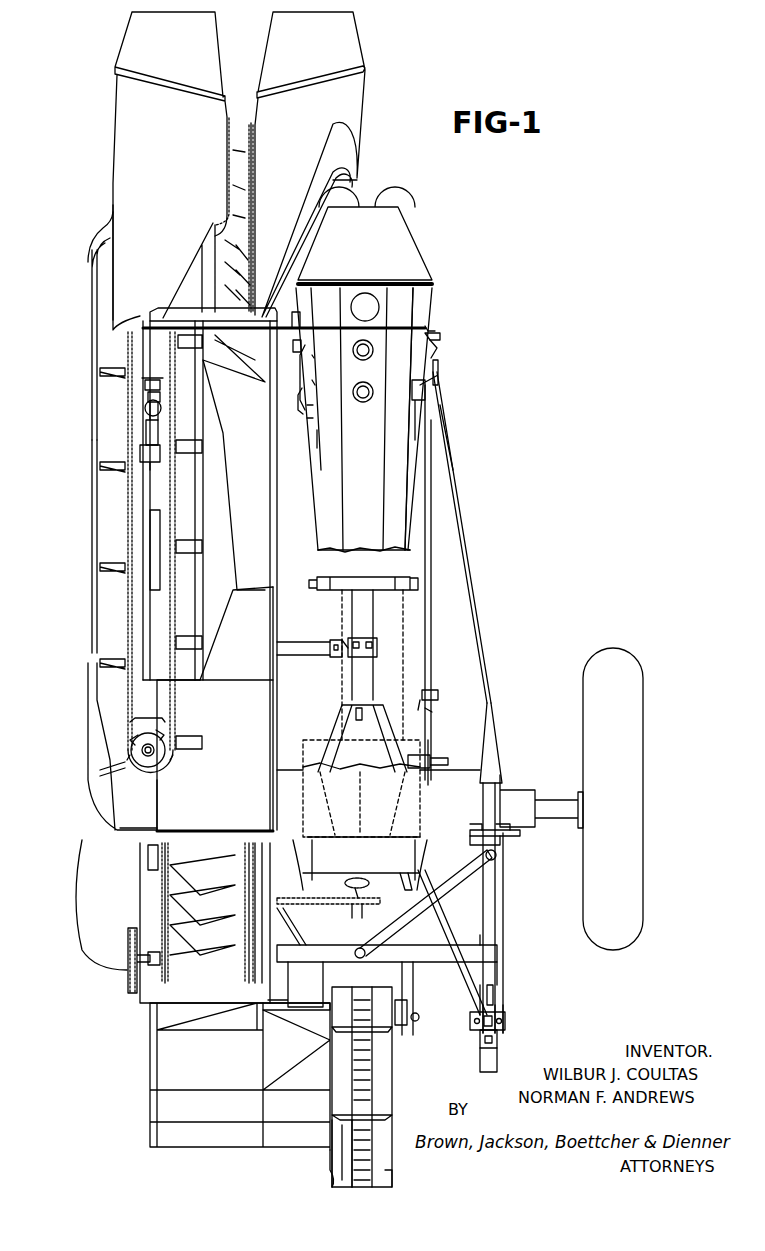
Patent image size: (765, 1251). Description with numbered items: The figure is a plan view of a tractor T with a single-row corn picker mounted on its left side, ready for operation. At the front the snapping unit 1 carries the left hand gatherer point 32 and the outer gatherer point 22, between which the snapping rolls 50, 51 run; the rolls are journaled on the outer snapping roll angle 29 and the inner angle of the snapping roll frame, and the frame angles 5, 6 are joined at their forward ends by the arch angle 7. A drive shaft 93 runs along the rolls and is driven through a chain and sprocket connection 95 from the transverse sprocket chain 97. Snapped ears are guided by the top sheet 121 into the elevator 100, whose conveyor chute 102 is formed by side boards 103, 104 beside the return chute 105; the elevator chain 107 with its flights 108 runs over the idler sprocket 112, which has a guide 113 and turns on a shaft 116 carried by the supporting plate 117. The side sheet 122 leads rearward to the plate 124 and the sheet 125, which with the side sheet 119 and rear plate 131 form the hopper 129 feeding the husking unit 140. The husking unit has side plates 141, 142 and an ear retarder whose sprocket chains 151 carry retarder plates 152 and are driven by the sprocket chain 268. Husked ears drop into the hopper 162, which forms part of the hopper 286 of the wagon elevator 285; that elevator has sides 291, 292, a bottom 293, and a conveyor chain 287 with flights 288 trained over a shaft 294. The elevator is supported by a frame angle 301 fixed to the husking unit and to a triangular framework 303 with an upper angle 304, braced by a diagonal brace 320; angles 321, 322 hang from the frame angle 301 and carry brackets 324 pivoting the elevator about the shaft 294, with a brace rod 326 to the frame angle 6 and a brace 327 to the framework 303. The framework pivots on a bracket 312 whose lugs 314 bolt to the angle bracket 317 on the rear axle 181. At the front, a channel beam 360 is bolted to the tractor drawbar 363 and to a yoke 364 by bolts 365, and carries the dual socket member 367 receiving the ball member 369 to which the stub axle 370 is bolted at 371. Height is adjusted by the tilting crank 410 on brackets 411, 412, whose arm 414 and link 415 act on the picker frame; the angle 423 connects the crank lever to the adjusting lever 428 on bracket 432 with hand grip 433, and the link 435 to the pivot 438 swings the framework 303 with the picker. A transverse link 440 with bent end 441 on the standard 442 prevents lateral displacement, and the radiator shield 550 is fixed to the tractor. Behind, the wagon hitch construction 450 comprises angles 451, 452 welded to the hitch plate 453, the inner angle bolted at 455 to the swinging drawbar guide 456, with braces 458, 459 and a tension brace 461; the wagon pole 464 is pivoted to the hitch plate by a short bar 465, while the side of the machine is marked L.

The snapping unit 1 is at (105, 164).
The main frame angle 5 is at (130, 352).
The inside frame angle 6 is at (272, 486).
The arch angle 7 is at (185, 305).
The outer gatherer point 22 is at (343, 36).
The outer snapping roll angle 29 is at (207, 268).
The left hand gatherer point 32 is at (140, 33).
The snapping roll 50 is at (252, 232).
The snapping roll 51 is at (218, 224).
The drive shaft 93 is at (155, 387).
The chain and sprocket connection 95 is at (140, 415).
The transverse sprocket chain 97 is at (140, 458).
The elevator 100 is at (84, 494).
The conveyor chute 102 is at (186, 504).
The side board 103 is at (165, 538).
The side board 104 is at (185, 580).
The return chute 105 is at (110, 530).
The elevator chain 107 is at (105, 552).
The flights 108 is at (118, 575).
The idler sprocket 112 is at (150, 740).
The guide 113 is at (142, 728).
The shaft 116 is at (148, 765).
The supporting plate 117 is at (110, 812).
The side sheet 119 is at (157, 795).
The top sheet 121 is at (233, 400).
The side sheet 122 is at (220, 485).
The plate 124 is at (250, 660).
The sheet 125 is at (270, 722).
The hopper 129 is at (245, 752).
The rear plate 131 is at (198, 830).
The husking unit 140 is at (140, 904).
The side plate 141 is at (155, 884).
The side plate 142 is at (255, 957).
The sprocket chains 151 is at (160, 915).
The retarder plates 152 is at (188, 960).
The hopper 162 is at (165, 1055).
The rear axle 181 is at (295, 770).
The sprocket chain 268 is at (125, 938).
The wagon elevator 285 is at (410, 1096).
The hopper 286 is at (384, 1083).
The conveyor chain 287 is at (365, 1158).
The flights 288 is at (375, 1125).
The side 291 is at (330, 1180).
The side 292 is at (392, 1178).
The bottom 293 is at (340, 1142).
The shaft 294 is at (424, 1016).
The frame angle 301 is at (335, 953).
The triangular framework 303 is at (498, 900).
The upper angle 304 is at (496, 923).
The bracket 312 is at (510, 793).
The lugs 314 is at (470, 828).
The angle bracket 317 is at (505, 835).
The diagonal brace 320 is at (462, 878).
The angle 321 is at (308, 990).
The angle 322 is at (410, 980).
The bracket 324 is at (328, 1007).
The brace rod 326 is at (300, 920).
The brace 327 is at (455, 920).
The channel beam 360 is at (364, 682).
The tractor drawbar 363 is at (362, 770).
The yoke 364 is at (330, 575).
The bolts 365 is at (312, 585).
The dual socket member 367 is at (356, 660).
The ball member 369 is at (330, 655).
The stub axle 370 is at (290, 645).
The bolts 371 is at (332, 640).
The tilting crank 410 is at (310, 415).
The bracket 411 is at (410, 447).
The bracket 412 is at (318, 445).
The arm 414 is at (302, 380).
The link 415 is at (300, 323).
The angle 423 is at (437, 590).
The adjusting lever 428 is at (430, 740).
The bracket 432 is at (424, 765).
The hand grip 433 is at (430, 692).
The link 435 is at (462, 600).
The pivot 438 is at (497, 778).
The link 440 is at (397, 328).
The link end 441 is at (435, 333).
The standard 442 is at (437, 341).
The wagon hitch construction 450 is at (512, 1007).
The inner angle 451 is at (480, 985).
The angle 452 is at (500, 977).
The hitch plate 453 is at (505, 1020).
The bolts 455 is at (405, 880).
The swinging drawbar guide 456 is at (340, 882).
The brace 458 is at (398, 908).
The second brace 459 is at (480, 940).
The tension brace 461 is at (490, 990).
The wagon pole 464 is at (500, 1060).
The short bar 465 is at (495, 1040).
The radiator shield 550 is at (365, 235).
The picker unit L is at (72, 522).
The tractor T is at (432, 358).